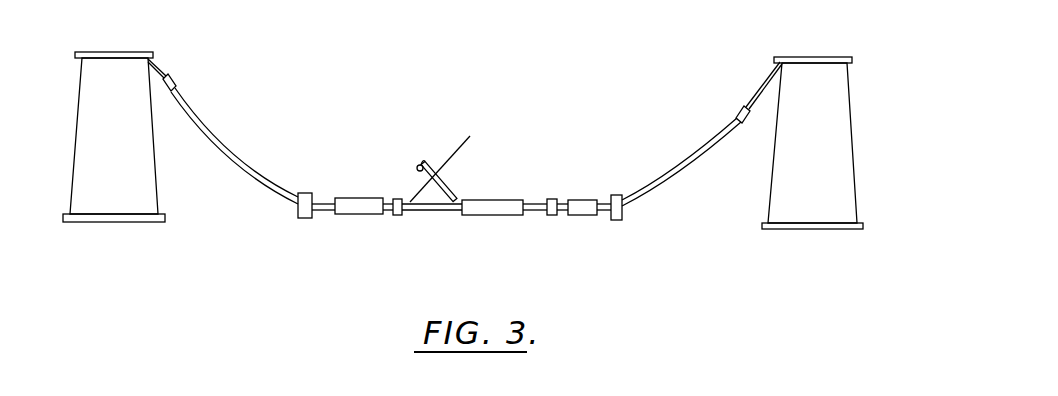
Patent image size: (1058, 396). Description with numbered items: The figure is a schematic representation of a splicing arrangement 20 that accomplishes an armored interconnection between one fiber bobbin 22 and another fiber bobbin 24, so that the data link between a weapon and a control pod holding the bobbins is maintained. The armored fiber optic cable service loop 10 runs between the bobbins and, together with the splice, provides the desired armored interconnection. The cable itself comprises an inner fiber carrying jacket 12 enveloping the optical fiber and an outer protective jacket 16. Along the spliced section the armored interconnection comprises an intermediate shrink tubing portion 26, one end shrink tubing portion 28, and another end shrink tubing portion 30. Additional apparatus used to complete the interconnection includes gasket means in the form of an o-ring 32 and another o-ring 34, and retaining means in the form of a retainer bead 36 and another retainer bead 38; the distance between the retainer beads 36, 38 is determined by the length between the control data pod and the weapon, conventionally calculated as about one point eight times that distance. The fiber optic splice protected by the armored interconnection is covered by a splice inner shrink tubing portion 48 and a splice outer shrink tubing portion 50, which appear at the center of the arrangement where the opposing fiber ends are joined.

The armored fiber optic cable service loop 10 is at (373, 228).
The inner fiber carrying jacket 12 is at (420, 183).
The outer protective jacket 16 is at (447, 210).
The splicing arrangement 20 is at (416, 68).
The fiber bobbin 22 is at (119, 186).
The fiber bobbin 24 is at (823, 170).
The intermediate shrink tubing portion 26 is at (510, 216).
The end shrink tubing portion 28 is at (588, 200).
The end shrink tubing portion 30 is at (337, 213).
The o-ring 32 is at (550, 198).
The o-ring 34 is at (401, 216).
The retainer bead 36 is at (625, 193).
The retainer bead 38 is at (305, 193).
The splice inner shrink tubing portion 48 is at (430, 167).
The splice outer shrink tubing portion 50 is at (420, 165).